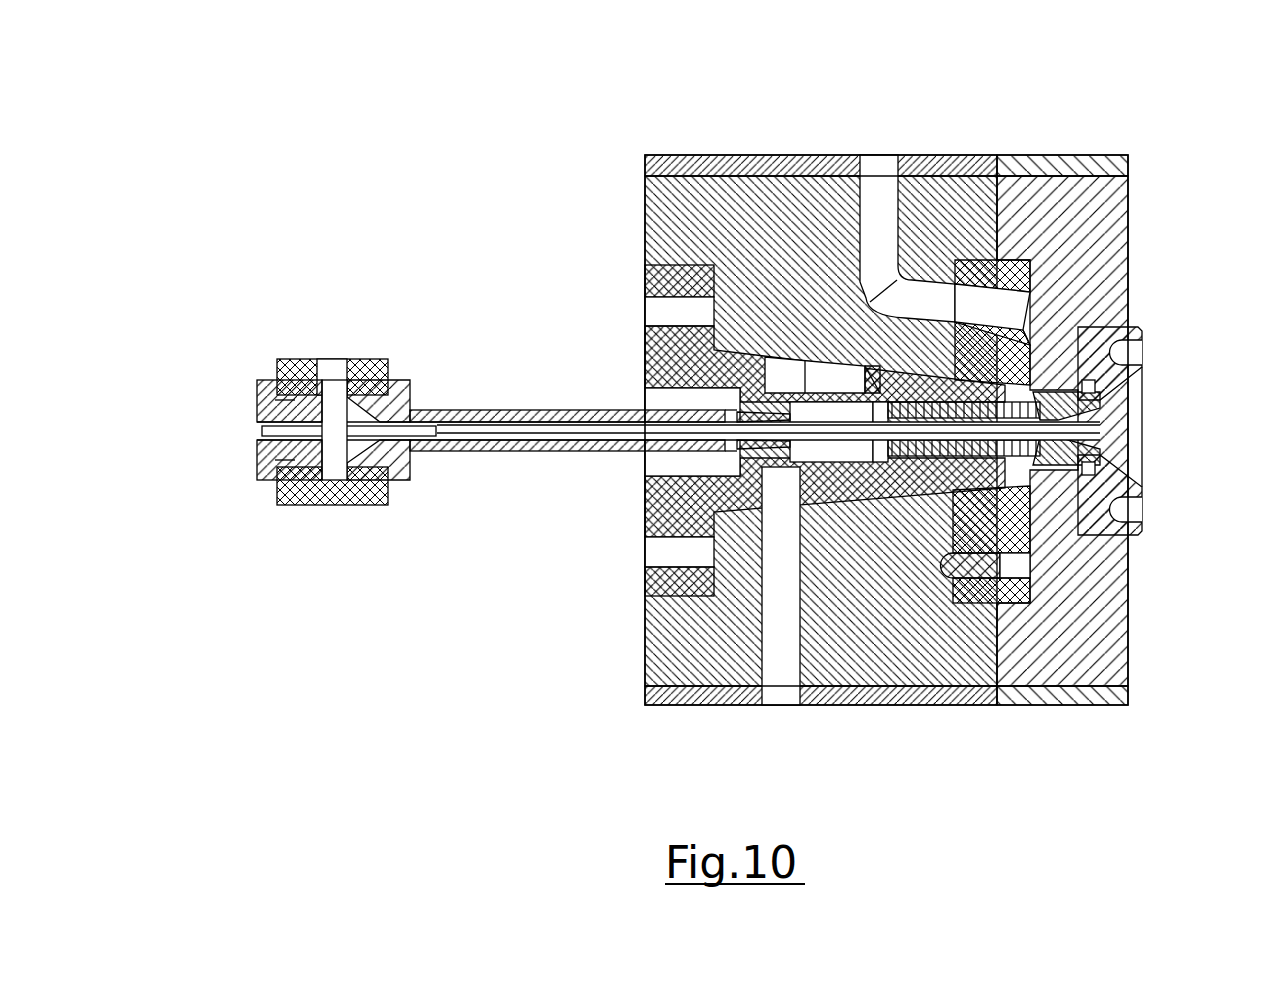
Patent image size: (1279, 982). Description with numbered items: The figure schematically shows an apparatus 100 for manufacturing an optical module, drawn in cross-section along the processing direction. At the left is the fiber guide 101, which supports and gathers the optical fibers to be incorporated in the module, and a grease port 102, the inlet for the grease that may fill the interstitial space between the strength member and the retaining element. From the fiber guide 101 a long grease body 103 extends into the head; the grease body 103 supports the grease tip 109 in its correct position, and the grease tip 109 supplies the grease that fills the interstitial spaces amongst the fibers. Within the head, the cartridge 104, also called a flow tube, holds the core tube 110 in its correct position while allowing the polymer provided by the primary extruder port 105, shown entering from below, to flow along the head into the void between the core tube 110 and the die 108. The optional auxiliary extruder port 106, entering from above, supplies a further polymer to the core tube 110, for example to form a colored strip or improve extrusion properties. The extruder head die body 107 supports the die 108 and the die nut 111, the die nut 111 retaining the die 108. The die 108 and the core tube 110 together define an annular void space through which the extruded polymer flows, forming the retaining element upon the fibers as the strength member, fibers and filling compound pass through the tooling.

The apparatus 100 is at (640, 106).
The fiber guide 101 is at (257, 411).
The grease port 102 is at (330, 358).
The grease body 103 is at (517, 409).
The cartridge 104 is at (644, 496).
The primary extruder port 105 is at (782, 706).
The auxiliary extruder port 106 is at (873, 155).
The extruder head die body 107 is at (1129, 578).
The die 108 is at (1101, 458).
The grease tip 109 is at (1101, 430).
The core tube 110 is at (1101, 416).
The die nut 111 is at (1143, 352).